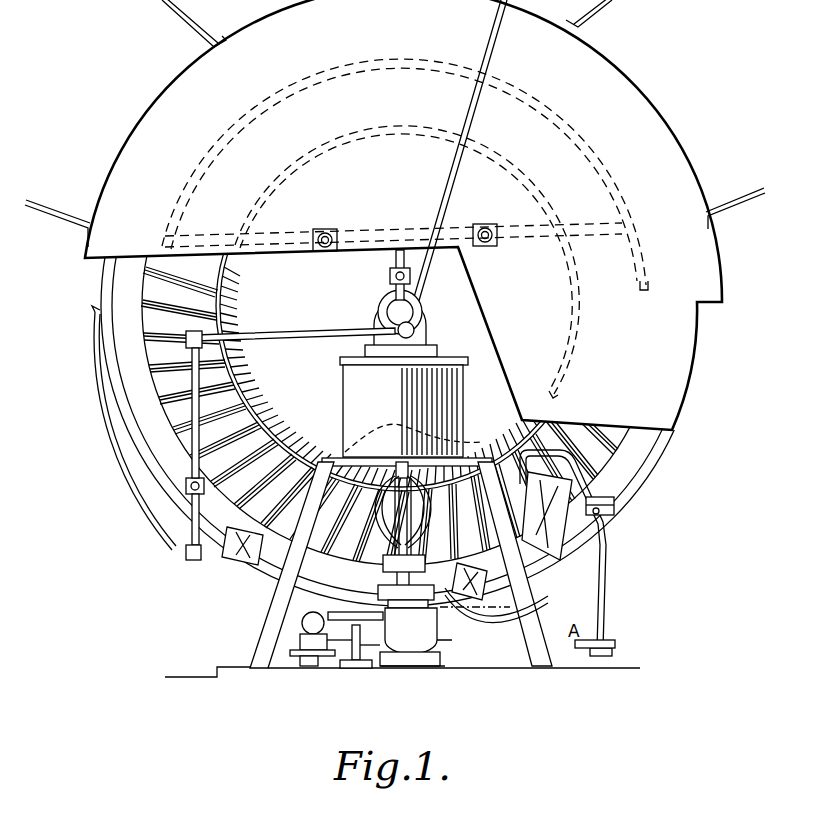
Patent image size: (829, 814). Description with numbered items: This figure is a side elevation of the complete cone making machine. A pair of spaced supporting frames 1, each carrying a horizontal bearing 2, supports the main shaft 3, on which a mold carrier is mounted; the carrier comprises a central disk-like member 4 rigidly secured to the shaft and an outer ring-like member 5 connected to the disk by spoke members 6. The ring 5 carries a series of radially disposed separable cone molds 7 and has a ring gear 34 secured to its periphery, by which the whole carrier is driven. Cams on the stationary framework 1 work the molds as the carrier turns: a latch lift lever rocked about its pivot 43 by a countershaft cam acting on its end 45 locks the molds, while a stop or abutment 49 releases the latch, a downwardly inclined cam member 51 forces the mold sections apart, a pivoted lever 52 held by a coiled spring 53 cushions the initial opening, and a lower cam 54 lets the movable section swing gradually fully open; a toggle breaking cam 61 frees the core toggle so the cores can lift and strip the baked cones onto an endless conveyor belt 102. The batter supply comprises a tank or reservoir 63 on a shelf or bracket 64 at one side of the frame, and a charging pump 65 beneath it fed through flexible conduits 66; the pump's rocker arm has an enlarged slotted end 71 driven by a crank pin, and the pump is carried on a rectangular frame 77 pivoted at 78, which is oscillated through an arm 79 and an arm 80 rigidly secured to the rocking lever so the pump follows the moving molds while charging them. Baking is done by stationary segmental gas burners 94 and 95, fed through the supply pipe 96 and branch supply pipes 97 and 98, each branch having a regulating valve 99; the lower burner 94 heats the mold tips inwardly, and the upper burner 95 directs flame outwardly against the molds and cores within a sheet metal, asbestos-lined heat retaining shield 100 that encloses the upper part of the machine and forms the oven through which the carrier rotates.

The supporting frames 1 is at (283, 620).
The horizontal bearing 2 is at (418, 318).
The main shaft 3 is at (378, 316).
The disk-like member 4 is at (401, 306).
The ring-like member 5 is at (122, 340).
The spoke members 6 is at (233, 283).
The cone molds 7 is at (258, 540).
The ring gear 34 is at (102, 288).
The pivot 43 is at (358, 656).
The end of lever 45 is at (306, 654).
The stop or abutment 49 is at (629, 474).
The cam member 51 is at (600, 499).
The pivoted lever 52 is at (598, 515).
The coiled spring 53 is at (614, 507).
The lower cam 54 is at (606, 553).
The toggle breaking cam 61 is at (520, 456).
The tank or reservoir 63 is at (404, 407).
The shelf or bracket 64 is at (437, 455).
The charging pump 65 is at (396, 653).
The flexible conduits 66 is at (390, 527).
The enlarged end of rocker arm 71 is at (303, 633).
The rectangular frame 77 is at (446, 630).
The pivot 78 is at (405, 664).
The arm 79 is at (350, 612).
The arm 80 is at (332, 611).
The segmental gas burner 94 is at (187, 482).
The segmental gas burner 95 is at (382, 70).
The supply pipe 96 is at (451, 184).
The branch supply pipe 97 is at (293, 334).
The branch supply pipe 98 is at (395, 259).
The regulating valve 99 is at (391, 280).
The heat retaining shield 100 is at (395, 215).
The endless conveyor belt 102 is at (606, 644).